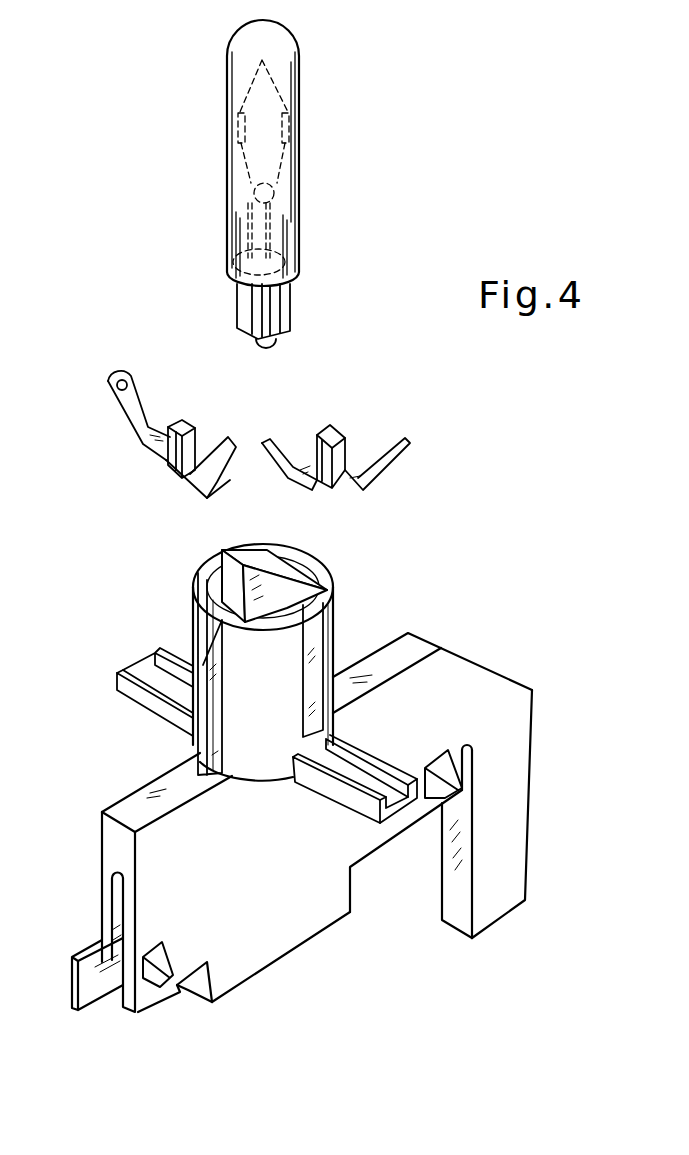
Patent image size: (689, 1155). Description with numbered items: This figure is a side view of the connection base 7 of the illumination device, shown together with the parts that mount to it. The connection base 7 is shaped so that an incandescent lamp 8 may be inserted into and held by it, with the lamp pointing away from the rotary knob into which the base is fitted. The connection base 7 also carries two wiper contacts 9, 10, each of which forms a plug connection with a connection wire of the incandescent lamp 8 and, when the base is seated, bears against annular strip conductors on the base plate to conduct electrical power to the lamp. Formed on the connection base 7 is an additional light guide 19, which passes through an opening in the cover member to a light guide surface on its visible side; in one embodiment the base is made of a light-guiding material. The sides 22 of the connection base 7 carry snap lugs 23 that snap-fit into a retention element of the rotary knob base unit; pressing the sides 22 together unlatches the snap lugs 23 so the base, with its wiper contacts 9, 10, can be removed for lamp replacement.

The connection base 7 is at (472, 660).
The incandescent lamp 8 is at (300, 153).
The wiper contact 9 is at (142, 420).
The wiper contact 10 is at (330, 437).
The light guide 19 is at (497, 880).
The sides 22 is at (92, 967).
The snap lugs 23 is at (442, 773).